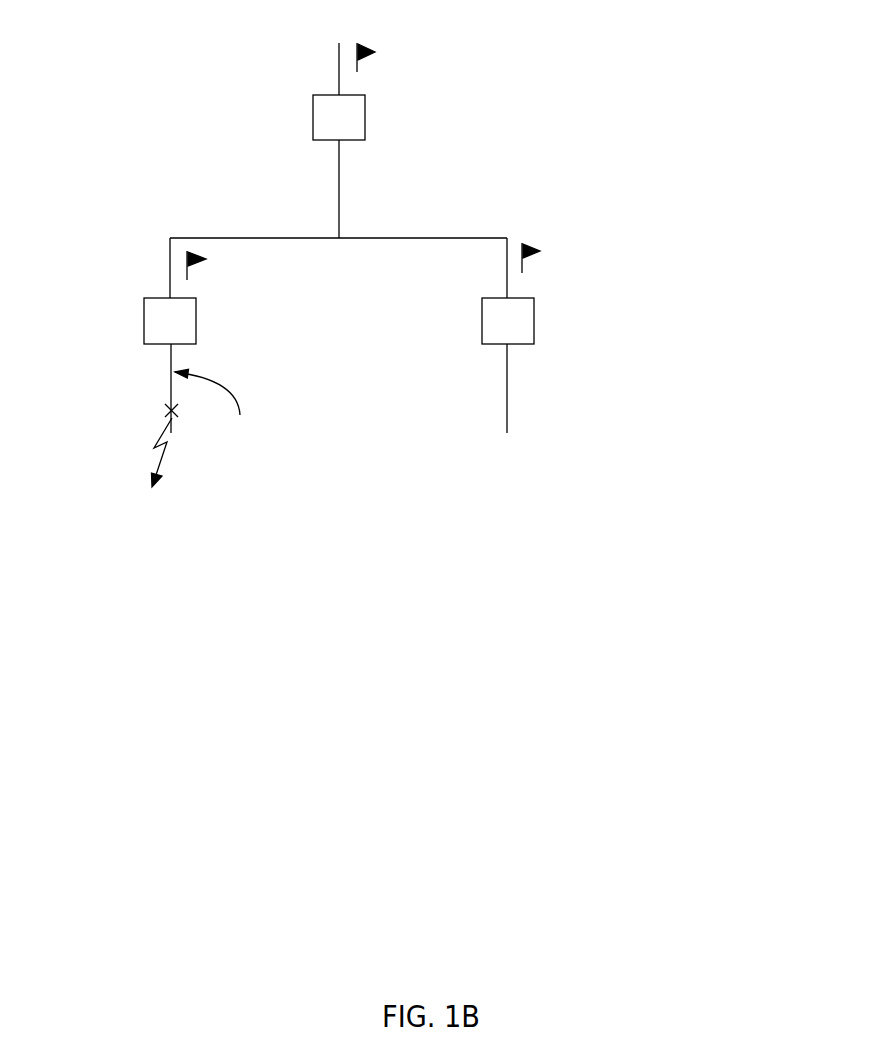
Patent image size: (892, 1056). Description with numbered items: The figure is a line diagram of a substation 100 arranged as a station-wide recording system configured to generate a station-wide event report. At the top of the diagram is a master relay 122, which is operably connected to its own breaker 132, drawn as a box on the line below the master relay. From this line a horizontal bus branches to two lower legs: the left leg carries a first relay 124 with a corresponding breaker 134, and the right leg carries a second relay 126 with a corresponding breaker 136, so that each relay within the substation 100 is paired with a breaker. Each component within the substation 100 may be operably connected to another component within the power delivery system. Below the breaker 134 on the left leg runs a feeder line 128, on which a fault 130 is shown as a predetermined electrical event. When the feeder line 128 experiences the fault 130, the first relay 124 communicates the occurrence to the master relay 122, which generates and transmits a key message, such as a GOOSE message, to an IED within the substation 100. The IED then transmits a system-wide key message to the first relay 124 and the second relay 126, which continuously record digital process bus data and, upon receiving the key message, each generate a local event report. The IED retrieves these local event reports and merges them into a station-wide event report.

The substation 100 is at (155, 65).
The master relay 122 is at (497, 57).
The first relay 124 is at (320, 267).
The second relay 126 is at (665, 245).
The feeder line 128 is at (287, 453).
The fault 130 is at (117, 494).
The breaker 132 is at (375, 117).
The breaker 134 is at (150, 290).
The breaker 136 is at (540, 323).